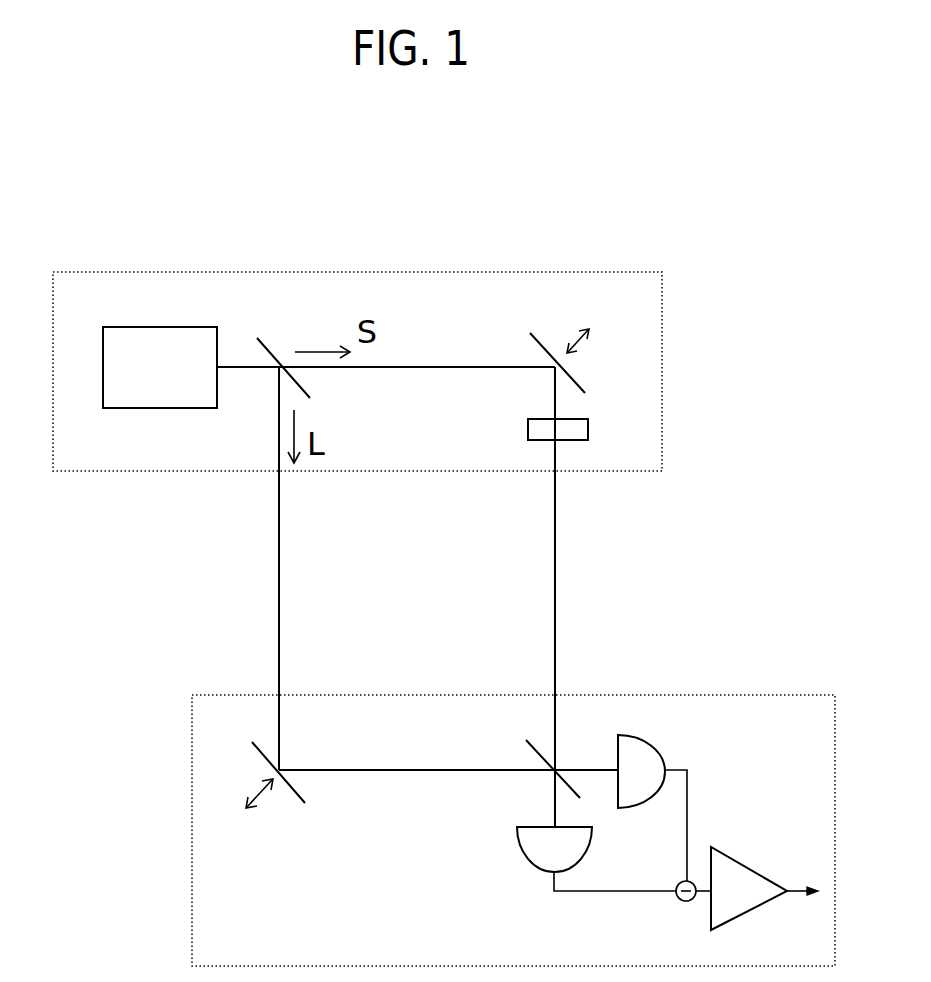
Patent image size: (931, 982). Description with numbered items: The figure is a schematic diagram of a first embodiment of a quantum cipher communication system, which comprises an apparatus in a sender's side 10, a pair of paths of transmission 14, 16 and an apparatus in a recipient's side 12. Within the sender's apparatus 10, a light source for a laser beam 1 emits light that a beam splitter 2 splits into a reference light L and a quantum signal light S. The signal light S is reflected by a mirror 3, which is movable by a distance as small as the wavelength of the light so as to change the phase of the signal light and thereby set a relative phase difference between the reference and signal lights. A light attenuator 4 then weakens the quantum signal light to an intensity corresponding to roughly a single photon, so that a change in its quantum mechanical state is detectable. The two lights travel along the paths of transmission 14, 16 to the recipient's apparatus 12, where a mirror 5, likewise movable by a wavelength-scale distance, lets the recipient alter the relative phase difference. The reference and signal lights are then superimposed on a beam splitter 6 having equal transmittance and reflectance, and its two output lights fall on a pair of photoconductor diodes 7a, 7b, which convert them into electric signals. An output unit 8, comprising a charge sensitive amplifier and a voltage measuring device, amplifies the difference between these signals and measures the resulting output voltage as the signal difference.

The light source for a laser beam 1 is at (170, 323).
The beam splitter 2 is at (266, 341).
The mirror 3 is at (538, 340).
The light attenuator 4 is at (593, 435).
The mirror 5 is at (261, 755).
The beam splitter 6 is at (541, 751).
The photoconductor diode 7a is at (665, 758).
The photoconductor diode 7b is at (517, 845).
The output unit 8 is at (731, 855).
The apparatus in a sender's side 10 is at (623, 268).
The apparatus in a recipient's side 12 is at (815, 692).
The path of transmission 14 is at (280, 574).
The path of transmission 16 is at (556, 572).